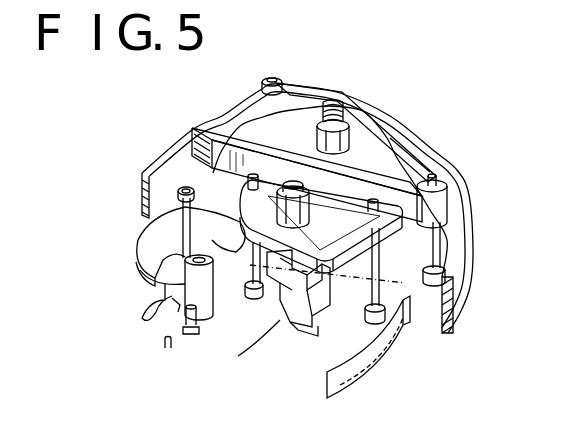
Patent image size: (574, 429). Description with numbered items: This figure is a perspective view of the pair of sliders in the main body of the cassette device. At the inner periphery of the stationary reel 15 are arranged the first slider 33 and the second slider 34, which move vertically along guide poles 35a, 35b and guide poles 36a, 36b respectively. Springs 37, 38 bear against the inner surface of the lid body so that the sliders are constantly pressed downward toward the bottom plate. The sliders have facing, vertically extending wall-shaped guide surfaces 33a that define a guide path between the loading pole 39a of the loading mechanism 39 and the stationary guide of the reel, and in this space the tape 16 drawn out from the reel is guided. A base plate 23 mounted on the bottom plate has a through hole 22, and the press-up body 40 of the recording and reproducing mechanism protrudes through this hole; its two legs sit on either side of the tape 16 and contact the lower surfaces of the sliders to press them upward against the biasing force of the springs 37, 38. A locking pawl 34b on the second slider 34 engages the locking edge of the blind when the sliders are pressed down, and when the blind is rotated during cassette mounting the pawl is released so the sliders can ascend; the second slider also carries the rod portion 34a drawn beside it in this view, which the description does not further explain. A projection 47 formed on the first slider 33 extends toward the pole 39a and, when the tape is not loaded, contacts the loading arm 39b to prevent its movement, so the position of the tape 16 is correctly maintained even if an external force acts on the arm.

The stationary reel 15 is at (476, 279).
The tape 16 is at (352, 378).
The through hole 22 is at (315, 318).
The base plate 23 is at (246, 347).
The first slider 33 is at (370, 135).
The guide surface 33a is at (404, 142).
The second slider 34 is at (346, 268).
The rod 34a is at (382, 280).
The locking pawl 34b is at (252, 297).
The guide pole 35a is at (440, 175).
The guide pole 35b is at (277, 78).
The guide pole 36a is at (463, 216).
The guide pole 36b is at (254, 176).
The spring 37 is at (346, 108).
The spring 38 is at (294, 182).
The loading mechanism 39 is at (141, 256).
The loading pole 39a is at (160, 232).
The loading arm 39b is at (150, 267).
The press-up body 40 is at (326, 328).
The projection 47 is at (202, 128).